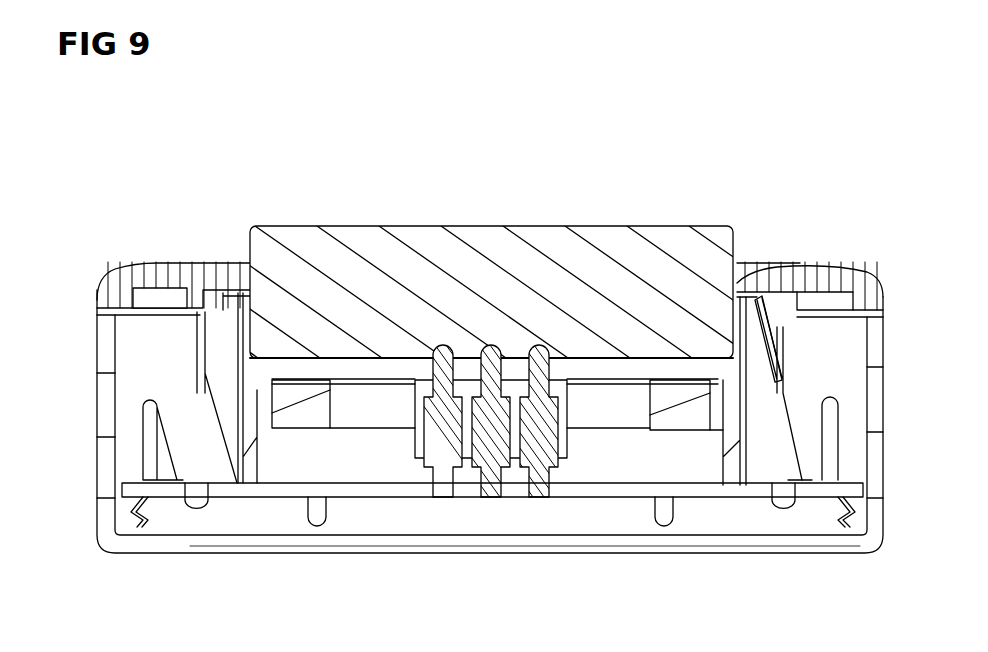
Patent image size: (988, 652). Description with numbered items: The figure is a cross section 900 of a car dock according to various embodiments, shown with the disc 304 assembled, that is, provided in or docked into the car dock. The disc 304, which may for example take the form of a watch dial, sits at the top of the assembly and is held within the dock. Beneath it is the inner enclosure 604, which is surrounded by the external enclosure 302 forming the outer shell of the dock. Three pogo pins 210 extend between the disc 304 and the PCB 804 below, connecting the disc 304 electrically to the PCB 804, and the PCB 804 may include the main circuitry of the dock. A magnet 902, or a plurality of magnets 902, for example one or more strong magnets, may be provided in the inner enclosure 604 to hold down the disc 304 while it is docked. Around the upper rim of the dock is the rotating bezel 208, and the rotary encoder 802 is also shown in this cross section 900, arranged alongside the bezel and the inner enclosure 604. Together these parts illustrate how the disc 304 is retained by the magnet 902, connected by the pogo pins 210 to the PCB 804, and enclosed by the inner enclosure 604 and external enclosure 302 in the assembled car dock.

The cross section 900 is at (860, 118).
The external enclosure 302 is at (107, 523).
The rotating bezel 208 is at (130, 278).
The disc 304 is at (495, 238).
The inner enclosure 604 is at (277, 363).
The magnet 902 is at (303, 407).
The pogo pins 210 is at (445, 432).
The PCB 804 is at (760, 497).
The rotary encoder 802 is at (762, 418).